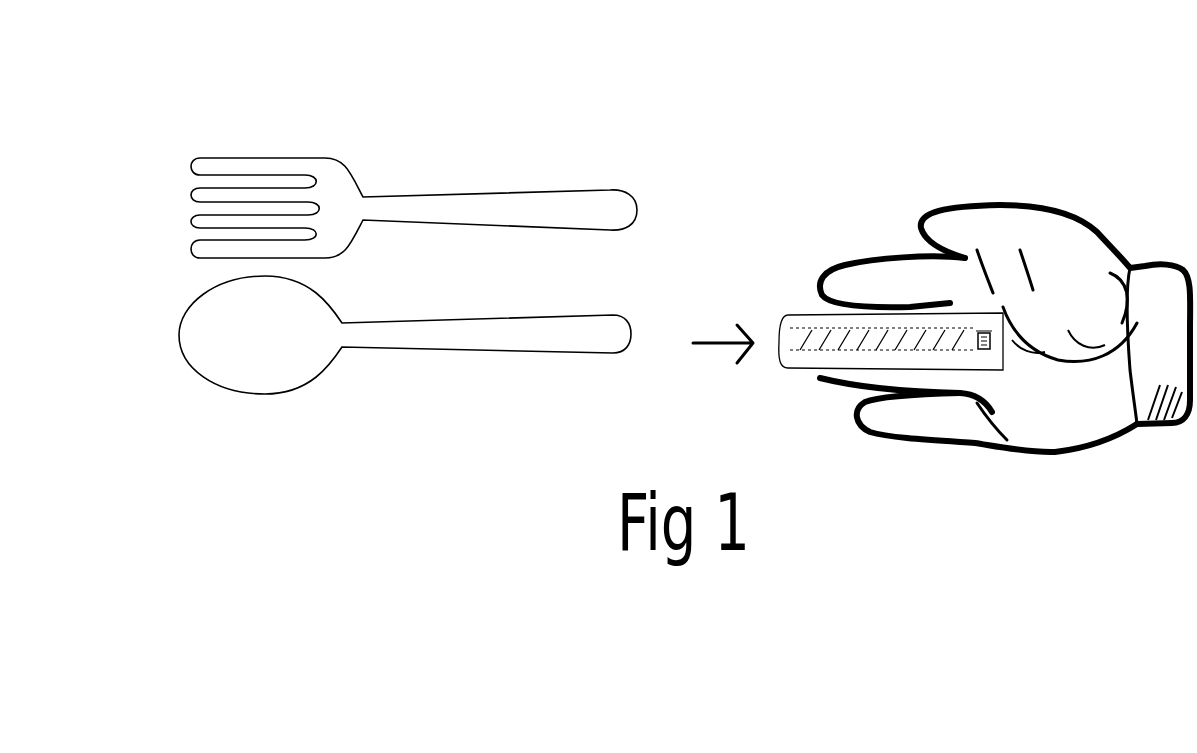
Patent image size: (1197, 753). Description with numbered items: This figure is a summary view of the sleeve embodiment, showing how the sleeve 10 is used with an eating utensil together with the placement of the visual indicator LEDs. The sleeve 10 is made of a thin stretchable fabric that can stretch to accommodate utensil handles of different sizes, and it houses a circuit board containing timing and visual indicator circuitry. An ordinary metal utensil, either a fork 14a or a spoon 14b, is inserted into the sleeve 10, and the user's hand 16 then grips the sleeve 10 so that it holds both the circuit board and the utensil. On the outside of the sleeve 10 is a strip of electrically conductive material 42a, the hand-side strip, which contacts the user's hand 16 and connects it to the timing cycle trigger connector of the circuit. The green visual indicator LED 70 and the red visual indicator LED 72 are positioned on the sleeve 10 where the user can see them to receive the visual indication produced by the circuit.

The sleeve base material 10 is at (895, 348).
The utensil (fork) 14a is at (448, 210).
The utensil (spoon) 14b is at (470, 335).
The user's hand 16 is at (1077, 283).
The conductive material to connect user's hand to timing cycle trigger connector (ha 42a is at (904, 330).
The green visual indicator LED 70 is at (988, 341).
The red visual indicator LED 72 is at (975, 336).